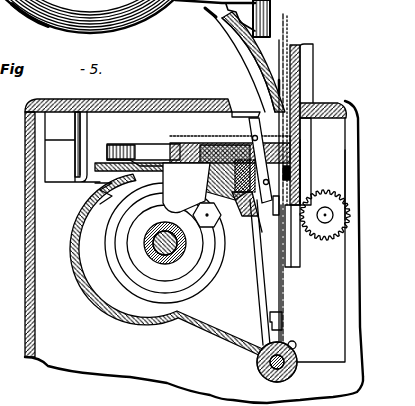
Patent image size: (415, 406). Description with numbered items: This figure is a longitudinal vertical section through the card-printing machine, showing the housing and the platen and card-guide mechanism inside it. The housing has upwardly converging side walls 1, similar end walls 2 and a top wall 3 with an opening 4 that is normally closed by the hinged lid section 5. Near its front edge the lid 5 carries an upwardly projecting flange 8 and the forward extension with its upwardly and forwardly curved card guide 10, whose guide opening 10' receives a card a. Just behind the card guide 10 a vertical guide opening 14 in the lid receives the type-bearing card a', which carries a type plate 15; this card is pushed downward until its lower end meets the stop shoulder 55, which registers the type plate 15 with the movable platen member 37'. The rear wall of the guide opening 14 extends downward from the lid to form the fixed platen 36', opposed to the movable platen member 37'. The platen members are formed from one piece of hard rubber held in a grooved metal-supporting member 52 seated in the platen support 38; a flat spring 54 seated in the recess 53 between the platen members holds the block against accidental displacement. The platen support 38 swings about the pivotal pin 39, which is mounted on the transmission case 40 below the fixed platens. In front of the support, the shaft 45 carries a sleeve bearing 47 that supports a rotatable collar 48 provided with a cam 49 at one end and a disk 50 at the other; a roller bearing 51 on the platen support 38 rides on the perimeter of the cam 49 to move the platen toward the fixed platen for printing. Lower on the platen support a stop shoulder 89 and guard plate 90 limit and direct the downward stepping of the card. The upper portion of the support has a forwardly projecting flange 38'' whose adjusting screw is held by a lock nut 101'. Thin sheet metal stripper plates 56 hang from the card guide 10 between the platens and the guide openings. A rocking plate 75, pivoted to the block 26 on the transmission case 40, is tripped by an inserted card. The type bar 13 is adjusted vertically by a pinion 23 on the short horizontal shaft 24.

The card a is at (204, 18).
The type-bearing card a' is at (293, 179).
The side walls 1 is at (130, 376).
The end walls 2 is at (25, 313).
The top wall 3 is at (158, 100).
The opening 4 is at (236, 103).
The lid section 5 is at (349, 109).
The upwardly projecting flange 8 is at (303, 49).
The card guide 10 is at (244, 62).
The guide opening 10' is at (243, 63).
The type bar 13 is at (300, 251).
The vertical guide opening 14 is at (301, 89).
The type plate 15 is at (291, 175).
The pinion 23 is at (349, 215).
The horizontal shaft 24 is at (333, 219).
The block 26 is at (346, 184).
The fixed platen 36' is at (325, 172).
The movable platen member 37' is at (220, 172).
The platen support 38 is at (250, 272).
The forwardly projecting flange 38'' is at (141, 143).
The pivotal pin 39 is at (258, 369).
The transmission case 40 is at (97, 198).
The shaft 45 is at (152, 252).
The sleeve bearing 47 is at (124, 264).
The collar 48 is at (120, 296).
The cam 49 is at (157, 283).
The disk 50 is at (141, 209).
The roller bearing 51 is at (200, 208).
The grooved metal-supporting member 52 is at (219, 216).
The recess 53 is at (265, 230).
The flat spring 54 is at (255, 224).
The stop shoulder 55 is at (260, 203).
The stripper plates 56 is at (279, 93).
The rocking plate 75 is at (259, 160).
The stop shoulder 89 is at (283, 312).
The guard plate 90 is at (284, 296).
The lock nut 101' is at (230, 142).